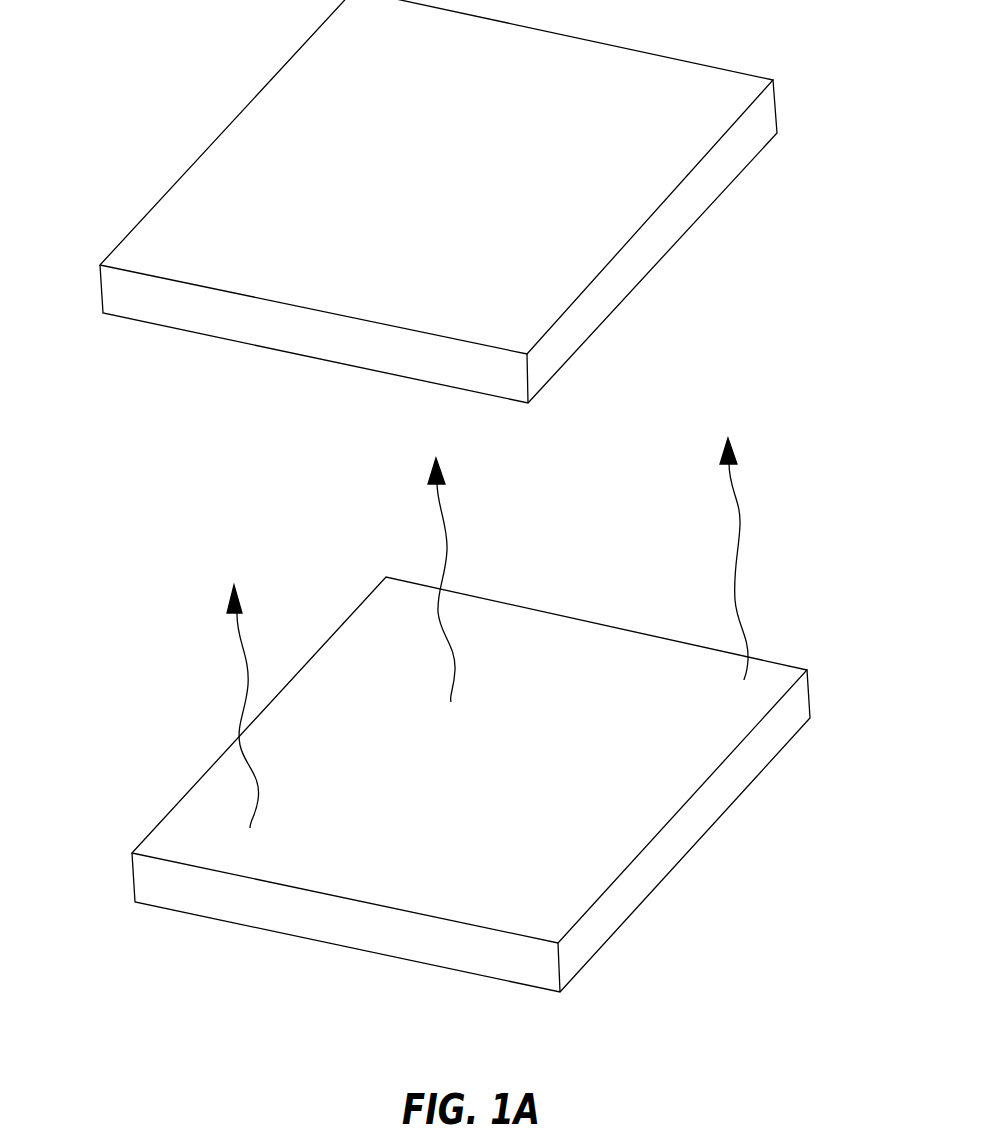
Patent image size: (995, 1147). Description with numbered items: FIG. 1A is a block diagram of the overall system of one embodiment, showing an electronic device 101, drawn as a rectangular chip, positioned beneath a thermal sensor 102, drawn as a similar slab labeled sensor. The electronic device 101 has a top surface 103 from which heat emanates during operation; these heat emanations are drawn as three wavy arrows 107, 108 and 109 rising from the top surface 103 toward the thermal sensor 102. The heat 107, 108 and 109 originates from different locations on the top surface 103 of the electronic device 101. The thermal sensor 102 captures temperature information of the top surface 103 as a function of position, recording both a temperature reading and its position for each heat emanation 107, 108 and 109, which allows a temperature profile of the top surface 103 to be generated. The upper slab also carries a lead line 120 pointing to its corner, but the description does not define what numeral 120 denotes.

The electronic device 101 is at (466, 784).
The thermal sensor 102 is at (433, 201).
The top surface 103 is at (194, 840).
The heat emanation 107 is at (224, 709).
The heat emanation 108 is at (437, 513).
The heat emanation 109 is at (725, 567).
The sensor top surface 120 is at (163, 253).